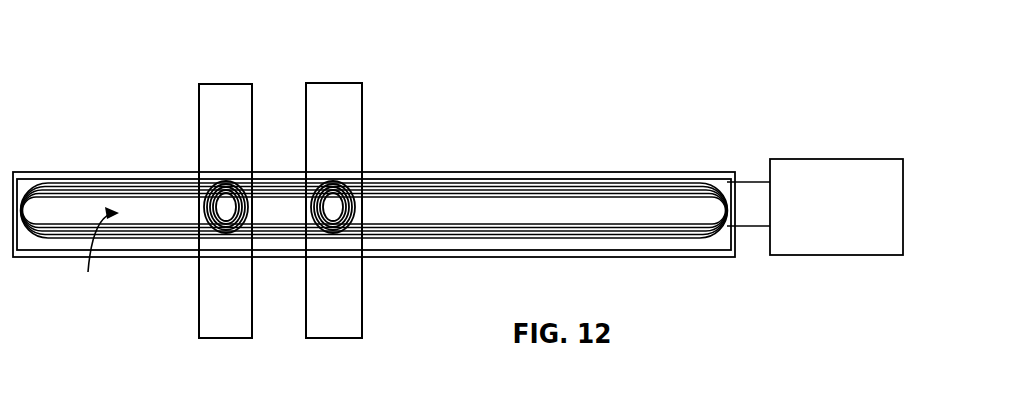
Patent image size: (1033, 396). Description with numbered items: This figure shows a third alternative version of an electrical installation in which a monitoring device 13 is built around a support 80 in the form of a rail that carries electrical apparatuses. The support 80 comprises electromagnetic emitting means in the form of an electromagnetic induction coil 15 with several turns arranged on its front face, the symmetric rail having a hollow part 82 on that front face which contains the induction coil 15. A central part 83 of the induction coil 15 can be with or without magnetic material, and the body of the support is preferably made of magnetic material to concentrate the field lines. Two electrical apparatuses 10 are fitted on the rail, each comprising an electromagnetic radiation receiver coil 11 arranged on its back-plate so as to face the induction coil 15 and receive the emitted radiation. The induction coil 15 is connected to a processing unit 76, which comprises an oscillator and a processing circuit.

The electrical apparatus 10 is at (348, 313).
The electromagnetic radiation receiver coil 11 is at (197, 212).
The monitoring device 13 is at (732, 164).
The electromagnetic induction coil 15 is at (558, 194).
The processing unit 76 is at (835, 160).
The support 80 is at (467, 176).
The hollow part 82 is at (68, 204).
The central part 83 is at (105, 257).